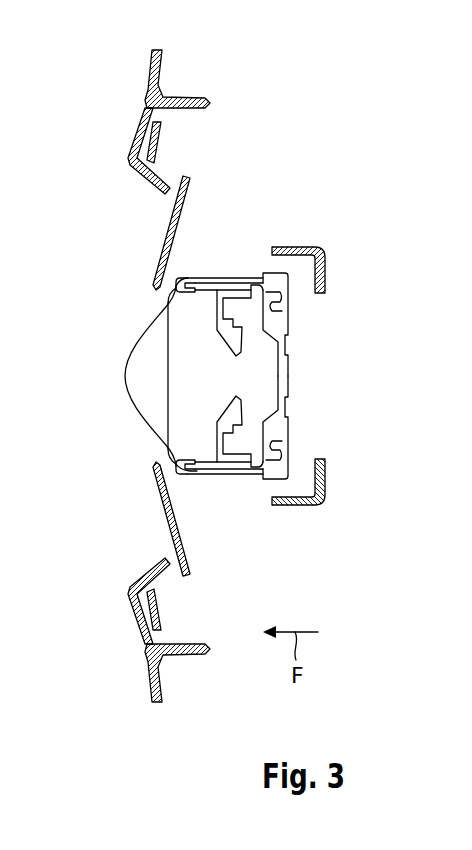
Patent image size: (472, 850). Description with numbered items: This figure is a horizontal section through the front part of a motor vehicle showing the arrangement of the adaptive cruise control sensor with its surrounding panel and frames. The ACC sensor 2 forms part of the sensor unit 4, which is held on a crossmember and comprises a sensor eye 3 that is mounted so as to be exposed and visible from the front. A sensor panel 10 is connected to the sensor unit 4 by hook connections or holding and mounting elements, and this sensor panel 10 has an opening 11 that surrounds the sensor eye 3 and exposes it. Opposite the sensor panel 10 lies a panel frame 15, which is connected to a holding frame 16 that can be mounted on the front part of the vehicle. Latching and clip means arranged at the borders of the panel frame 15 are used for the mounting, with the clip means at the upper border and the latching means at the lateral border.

The ACC sensor 2 is at (212, 389).
The sensor eye 3 is at (127, 404).
The sensor unit 4 is at (231, 277).
The sensor panel 10 is at (158, 515).
The opening 11 is at (166, 292).
The panel frame 15 is at (138, 128).
The holding frame 16 is at (150, 61).